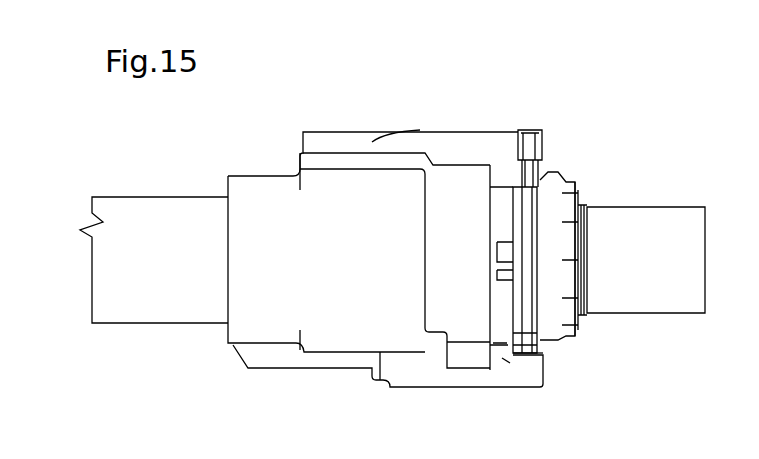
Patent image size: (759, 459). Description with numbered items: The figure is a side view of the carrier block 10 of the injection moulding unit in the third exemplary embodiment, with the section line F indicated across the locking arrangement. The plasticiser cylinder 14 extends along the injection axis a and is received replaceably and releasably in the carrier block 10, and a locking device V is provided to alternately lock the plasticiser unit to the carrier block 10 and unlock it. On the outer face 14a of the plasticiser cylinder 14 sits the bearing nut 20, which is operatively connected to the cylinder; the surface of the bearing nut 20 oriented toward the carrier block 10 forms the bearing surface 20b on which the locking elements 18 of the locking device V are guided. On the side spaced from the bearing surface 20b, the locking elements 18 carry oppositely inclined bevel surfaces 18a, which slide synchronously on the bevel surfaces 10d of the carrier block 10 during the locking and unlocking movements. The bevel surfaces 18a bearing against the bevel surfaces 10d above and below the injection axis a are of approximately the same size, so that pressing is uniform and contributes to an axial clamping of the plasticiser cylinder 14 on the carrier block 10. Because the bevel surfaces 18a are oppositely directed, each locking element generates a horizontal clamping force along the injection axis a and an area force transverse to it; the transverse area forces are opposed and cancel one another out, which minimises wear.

The carrier block 10 is at (350, 212).
The bevel surfaces of the carrier block 10d is at (515, 280).
The plasticiser cylinder 14 is at (133, 199).
The outer face of the plasticiser cylinder 14a is at (182, 276).
The locking elements 18 is at (523, 205).
The bevel surfaces 18a is at (513, 300).
The bearing nut 20 is at (575, 182).
The bearing surface 20b is at (545, 185).
The locking device V is at (569, 161).
The injection axis a is at (108, 260).
The section F- F is at (527, 447).